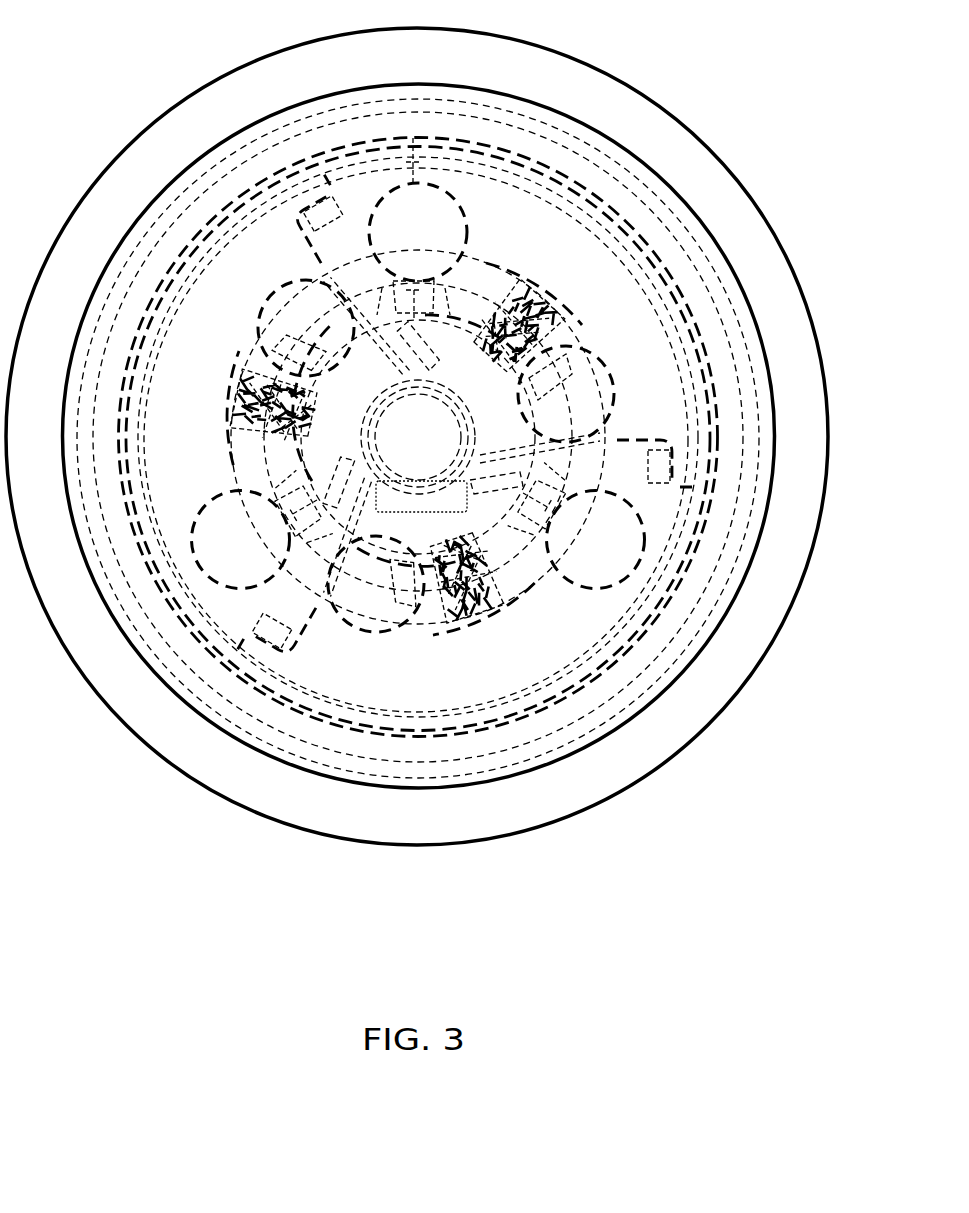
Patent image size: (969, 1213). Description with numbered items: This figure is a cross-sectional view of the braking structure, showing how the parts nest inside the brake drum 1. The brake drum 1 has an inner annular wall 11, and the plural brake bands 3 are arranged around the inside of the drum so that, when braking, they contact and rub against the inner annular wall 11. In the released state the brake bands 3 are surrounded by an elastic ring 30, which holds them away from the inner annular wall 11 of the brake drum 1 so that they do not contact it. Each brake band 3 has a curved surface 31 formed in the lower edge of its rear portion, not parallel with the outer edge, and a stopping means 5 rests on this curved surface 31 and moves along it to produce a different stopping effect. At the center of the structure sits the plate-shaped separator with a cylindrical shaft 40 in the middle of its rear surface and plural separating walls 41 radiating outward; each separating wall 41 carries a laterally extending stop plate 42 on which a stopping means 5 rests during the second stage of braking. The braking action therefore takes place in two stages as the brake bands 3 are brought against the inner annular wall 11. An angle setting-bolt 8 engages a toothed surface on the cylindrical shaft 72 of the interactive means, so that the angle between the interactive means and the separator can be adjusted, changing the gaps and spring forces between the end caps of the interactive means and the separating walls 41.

The brake drum 1 is at (665, 113).
The brake bands 3 is at (670, 280).
The stopping means 5 is at (270, 295).
The angle setting-bolt 8 is at (427, 503).
The inner annular wall 11 is at (348, 138).
The elastic ring 30 is at (383, 153).
The curved surface 31 is at (593, 353).
The cylindrical shaft 40 is at (440, 382).
The separating walls 41 is at (356, 481).
The stop plate 42 is at (352, 383).
The cylindrical shaft 72 is at (453, 404).